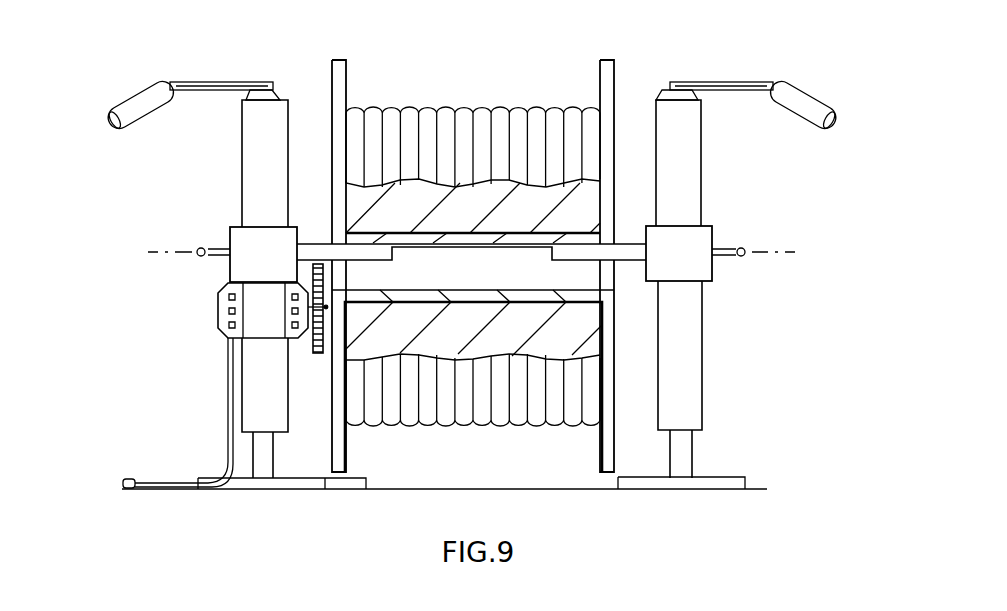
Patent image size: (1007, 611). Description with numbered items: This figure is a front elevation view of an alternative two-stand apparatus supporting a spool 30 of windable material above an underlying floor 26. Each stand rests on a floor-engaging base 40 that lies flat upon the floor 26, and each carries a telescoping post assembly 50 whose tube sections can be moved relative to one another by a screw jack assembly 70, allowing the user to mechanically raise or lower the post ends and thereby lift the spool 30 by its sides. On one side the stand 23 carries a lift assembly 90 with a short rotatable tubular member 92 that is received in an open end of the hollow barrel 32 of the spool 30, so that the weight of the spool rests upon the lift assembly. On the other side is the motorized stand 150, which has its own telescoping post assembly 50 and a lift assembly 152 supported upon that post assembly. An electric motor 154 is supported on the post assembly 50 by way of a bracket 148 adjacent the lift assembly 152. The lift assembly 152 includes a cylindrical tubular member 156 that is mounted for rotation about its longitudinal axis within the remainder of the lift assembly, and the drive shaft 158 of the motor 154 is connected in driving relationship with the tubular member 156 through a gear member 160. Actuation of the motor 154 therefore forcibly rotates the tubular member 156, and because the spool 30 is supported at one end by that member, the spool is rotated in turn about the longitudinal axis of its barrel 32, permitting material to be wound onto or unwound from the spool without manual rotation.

The stand 23 is at (692, 170).
The floor 26 is at (730, 488).
The spool 30 is at (614, 80).
The barrel 32 is at (537, 286).
The floor-engaging base 40 is at (340, 481).
The telescoping post assembly 50 is at (272, 90).
The screw jack assembly 70 is at (190, 80).
The lift assembly 90 is at (713, 238).
The tubular member 92 is at (552, 261).
The bracket 148 is at (262, 345).
The stand 150 is at (242, 172).
The lift assembly 152 is at (245, 258).
The electric motor 154 is at (228, 318).
The cylindrical tubular member 156 is at (313, 262).
The drive shaft 158 is at (323, 307).
The gear member 160 is at (318, 358).